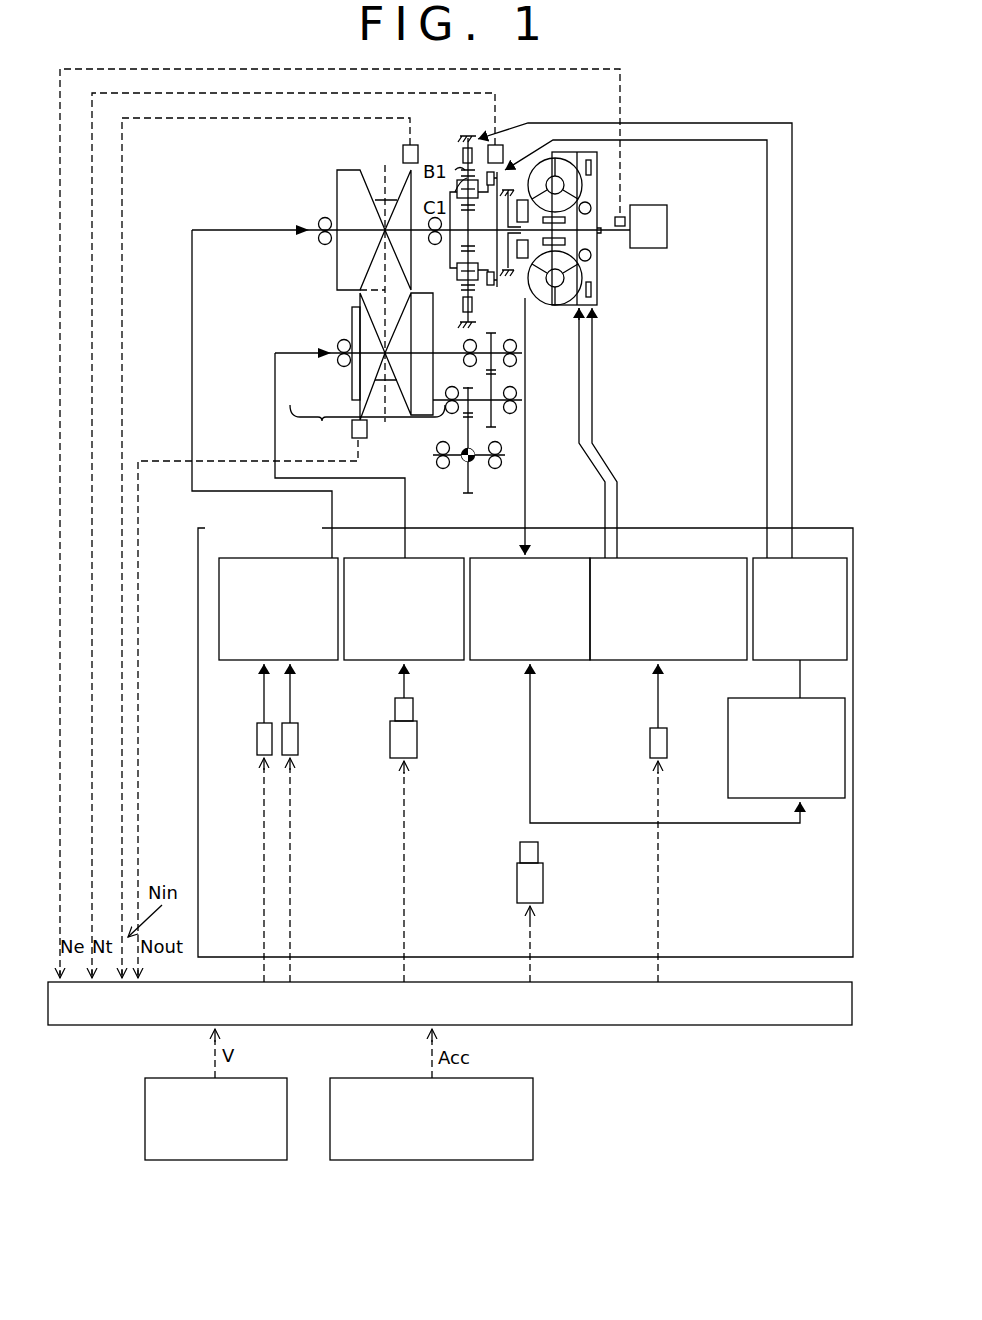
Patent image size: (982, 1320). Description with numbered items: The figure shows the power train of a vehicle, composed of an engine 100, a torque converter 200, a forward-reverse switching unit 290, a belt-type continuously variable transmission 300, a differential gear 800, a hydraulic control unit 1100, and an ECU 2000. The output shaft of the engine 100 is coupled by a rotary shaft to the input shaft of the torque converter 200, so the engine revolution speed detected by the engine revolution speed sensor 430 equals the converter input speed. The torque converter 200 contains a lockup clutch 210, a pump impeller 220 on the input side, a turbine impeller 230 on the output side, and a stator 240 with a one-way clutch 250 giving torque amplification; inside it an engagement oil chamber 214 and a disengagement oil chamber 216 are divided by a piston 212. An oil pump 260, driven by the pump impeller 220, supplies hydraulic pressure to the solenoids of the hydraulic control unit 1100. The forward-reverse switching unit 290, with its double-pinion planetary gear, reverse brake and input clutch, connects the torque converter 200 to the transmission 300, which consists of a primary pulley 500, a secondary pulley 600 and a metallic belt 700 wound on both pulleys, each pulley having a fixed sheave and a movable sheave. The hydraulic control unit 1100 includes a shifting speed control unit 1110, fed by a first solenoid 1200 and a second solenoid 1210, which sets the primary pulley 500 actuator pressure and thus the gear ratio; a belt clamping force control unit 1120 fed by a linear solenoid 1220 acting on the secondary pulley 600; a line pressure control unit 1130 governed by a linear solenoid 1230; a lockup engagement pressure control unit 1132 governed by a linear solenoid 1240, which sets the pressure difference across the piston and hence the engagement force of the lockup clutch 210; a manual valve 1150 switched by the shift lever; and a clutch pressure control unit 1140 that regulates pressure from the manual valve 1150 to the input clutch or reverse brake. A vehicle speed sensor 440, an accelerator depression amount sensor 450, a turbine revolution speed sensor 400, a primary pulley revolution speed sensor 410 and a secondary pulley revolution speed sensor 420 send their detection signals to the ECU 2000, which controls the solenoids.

The engine 100 is at (652, 205).
The torque converter 200 is at (643, 230).
The lockup clutch 210 is at (603, 308).
The piston 212 is at (592, 255).
The engagement oil chamber 214 is at (578, 314).
The disengagement oil chamber 216 is at (596, 290).
The pump impeller 220 is at (605, 346).
The turbine impeller 230 is at (572, 170).
The stator 240 is at (598, 192).
The one-way clutch 250 is at (600, 241).
The oil pump 260 is at (512, 273).
The forward-reverse switching unit 290 is at (455, 138).
The belt-type continuously variable transmission 300 is at (367, 425).
The turbine revolution speed sensor 400 is at (501, 158).
The primary pulley revolution speed sensor 410 is at (402, 153).
The secondary pulley revolution speed sensor 420 is at (367, 428).
The engine revolution speed sensor 430 is at (667, 228).
The vehicle speed sensor 440 is at (195, 1160).
The accelerator depression amount sensor 450 is at (410, 1160).
The primary pulley 500 is at (342, 266).
The secondary pulley 600 is at (352, 385).
The metallic belt 700 is at (360, 290).
The differential gear 800 is at (477, 464).
The hydraulic control unit 1100 is at (680, 528).
The shifting speed control unit 1110 is at (302, 662).
The belt clamping force control unit 1120 is at (440, 662).
The line pressure control unit 1130 is at (545, 662).
The lockup engagement pressure control unit 1132 is at (672, 662).
The clutch pressure control unit 1140 is at (828, 800).
The manual valve 1150 is at (798, 663).
The first solenoid for shifting control 1200 is at (240, 740).
The second solenoid for shifting control 1210 is at (300, 740).
The linear solenoid for belt clamping force control 1220 is at (420, 745).
The linear solenoid for line pressure control 1230 is at (545, 893).
The linear solenoid for lockup engagement pressure control 1240 is at (640, 758).
The ECU 2000 is at (668, 1027).